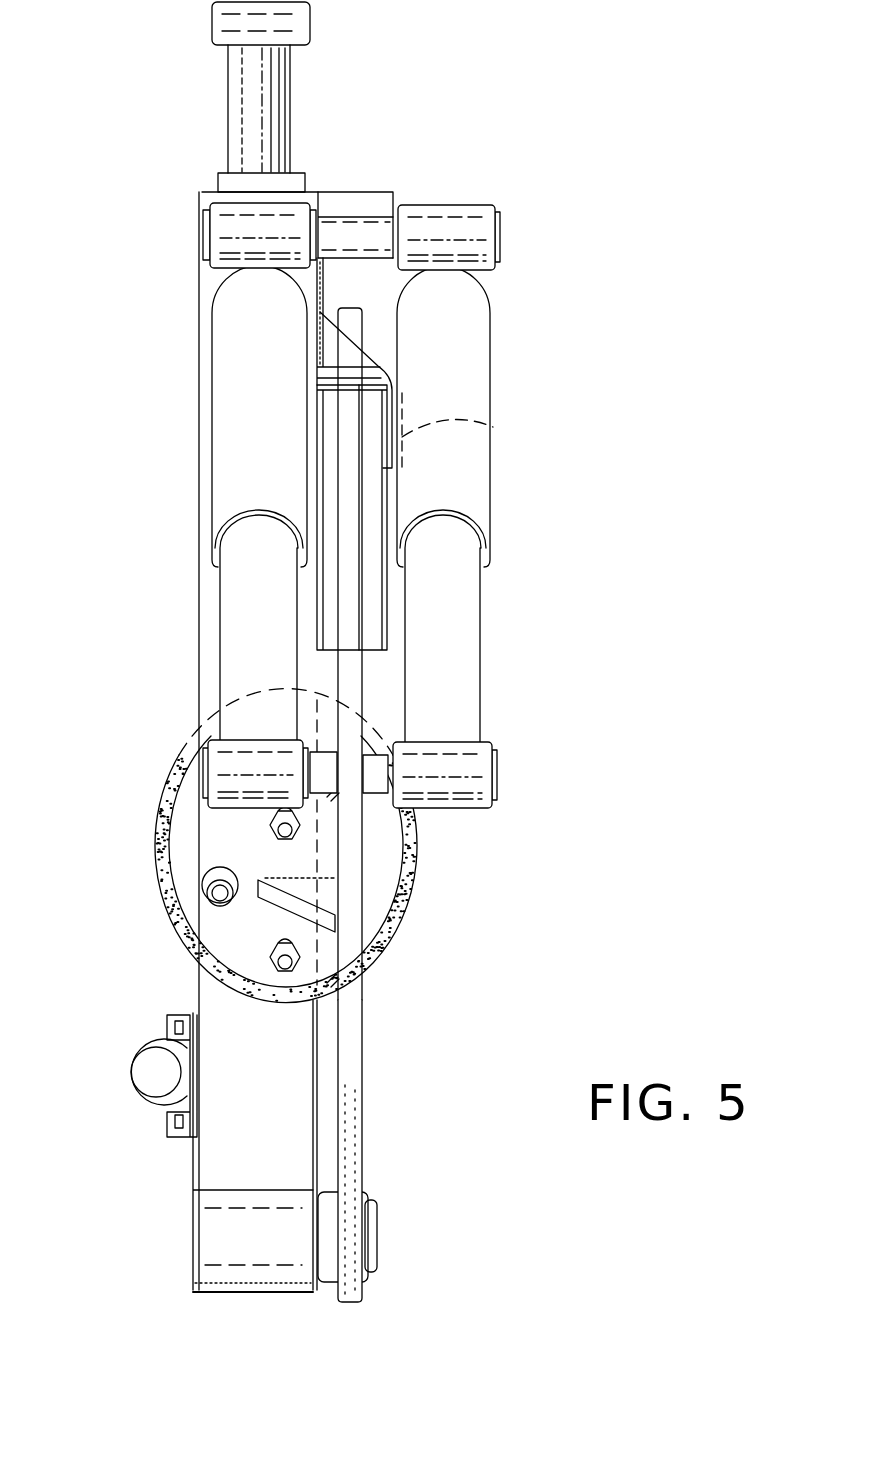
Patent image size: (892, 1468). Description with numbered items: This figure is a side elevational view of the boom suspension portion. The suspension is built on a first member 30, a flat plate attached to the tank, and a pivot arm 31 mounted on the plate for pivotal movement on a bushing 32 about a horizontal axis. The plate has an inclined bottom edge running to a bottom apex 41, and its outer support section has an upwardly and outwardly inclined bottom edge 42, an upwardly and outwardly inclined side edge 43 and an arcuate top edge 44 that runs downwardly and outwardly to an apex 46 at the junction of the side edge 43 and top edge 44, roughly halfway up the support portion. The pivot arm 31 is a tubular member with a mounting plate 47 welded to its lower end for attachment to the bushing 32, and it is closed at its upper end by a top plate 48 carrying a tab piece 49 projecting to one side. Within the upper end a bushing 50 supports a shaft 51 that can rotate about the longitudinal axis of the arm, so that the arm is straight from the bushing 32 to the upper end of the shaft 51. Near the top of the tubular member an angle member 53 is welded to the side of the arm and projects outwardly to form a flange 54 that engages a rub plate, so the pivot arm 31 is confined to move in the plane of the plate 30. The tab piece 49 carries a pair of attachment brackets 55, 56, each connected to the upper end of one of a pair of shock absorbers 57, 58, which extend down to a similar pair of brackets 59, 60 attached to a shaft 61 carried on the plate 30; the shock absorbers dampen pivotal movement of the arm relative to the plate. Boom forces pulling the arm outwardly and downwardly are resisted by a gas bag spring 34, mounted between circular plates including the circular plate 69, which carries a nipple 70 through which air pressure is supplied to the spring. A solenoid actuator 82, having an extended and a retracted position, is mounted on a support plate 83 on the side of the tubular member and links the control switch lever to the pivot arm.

The first member 30 is at (369, 1044).
The pivot arm 31 is at (196, 603).
The bushing 32 is at (235, 1185).
The gas bag spring 34 is at (152, 797).
The bottom apex 41 is at (345, 1302).
The bottom edge 42 is at (353, 1135).
The side edge 43 is at (356, 900).
The arcuate top edge 44 is at (345, 432).
The apex 46 is at (352, 751).
The mounting plate 47 is at (230, 1293).
The top plate 48 is at (217, 181).
The tab piece 49 is at (345, 191).
The bushing 50 is at (325, 577).
The shaft 51 is at (232, 75).
The angle member 53 is at (388, 361).
The flange 54 is at (492, 427).
The attachment bracket 55 is at (232, 229).
The attachment bracket 56 is at (455, 214).
The shock absorber 57 is at (219, 413).
The shock absorber 58 is at (489, 381).
The bracket 59 is at (215, 752).
The bracket 60 is at (453, 808).
The shaft 61 is at (373, 762).
The circular plate 69 is at (213, 845).
The nipple 70 is at (206, 886).
The solenoid actuator 82 is at (148, 1062).
The support plate 83 is at (201, 1082).